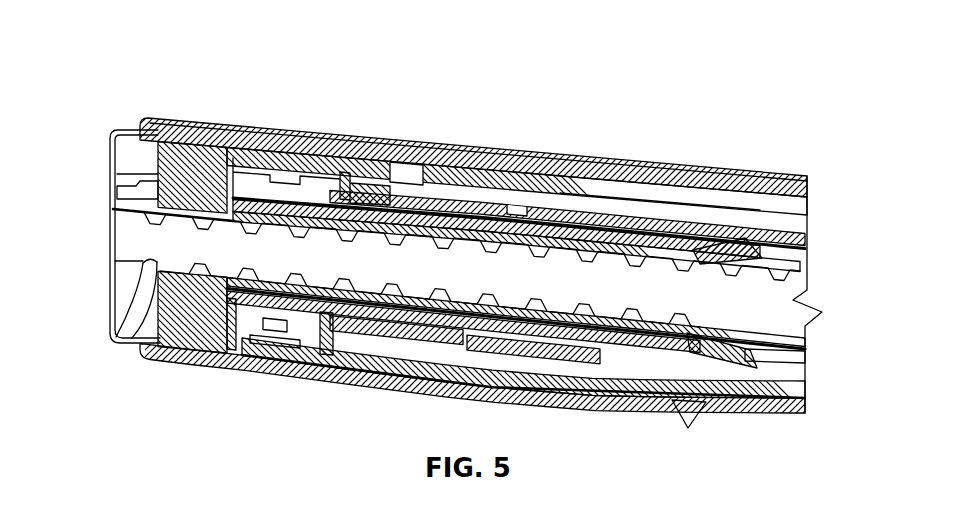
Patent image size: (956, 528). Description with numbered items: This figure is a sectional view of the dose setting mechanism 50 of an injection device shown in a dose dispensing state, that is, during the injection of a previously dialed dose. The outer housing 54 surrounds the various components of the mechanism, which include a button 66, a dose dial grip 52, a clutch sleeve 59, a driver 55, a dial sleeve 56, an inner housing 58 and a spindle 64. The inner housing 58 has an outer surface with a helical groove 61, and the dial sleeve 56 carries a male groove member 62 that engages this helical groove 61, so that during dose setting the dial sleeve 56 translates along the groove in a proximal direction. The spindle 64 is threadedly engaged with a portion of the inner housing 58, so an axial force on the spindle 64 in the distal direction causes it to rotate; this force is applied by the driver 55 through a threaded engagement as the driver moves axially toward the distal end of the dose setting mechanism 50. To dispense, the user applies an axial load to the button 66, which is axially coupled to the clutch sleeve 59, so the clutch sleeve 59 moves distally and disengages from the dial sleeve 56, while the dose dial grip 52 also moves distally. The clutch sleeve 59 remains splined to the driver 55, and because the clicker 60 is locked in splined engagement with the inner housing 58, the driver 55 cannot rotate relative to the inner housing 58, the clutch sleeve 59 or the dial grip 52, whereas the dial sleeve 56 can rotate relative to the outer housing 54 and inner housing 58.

The dose setting mechanism 50 is at (497, 48).
The dose dial grip 52 is at (173, 127).
The outer housing 54 is at (297, 130).
The driver 55 is at (230, 306).
The dial sleeve 56 is at (633, 187).
The inner housing 58 is at (805, 237).
The clutch sleeve 59 is at (200, 162).
The clicker 60 is at (760, 250).
The helical groove 61 is at (520, 205).
The male groove member 62 is at (405, 180).
The spindle 64 is at (792, 322).
The button 66 is at (110, 226).